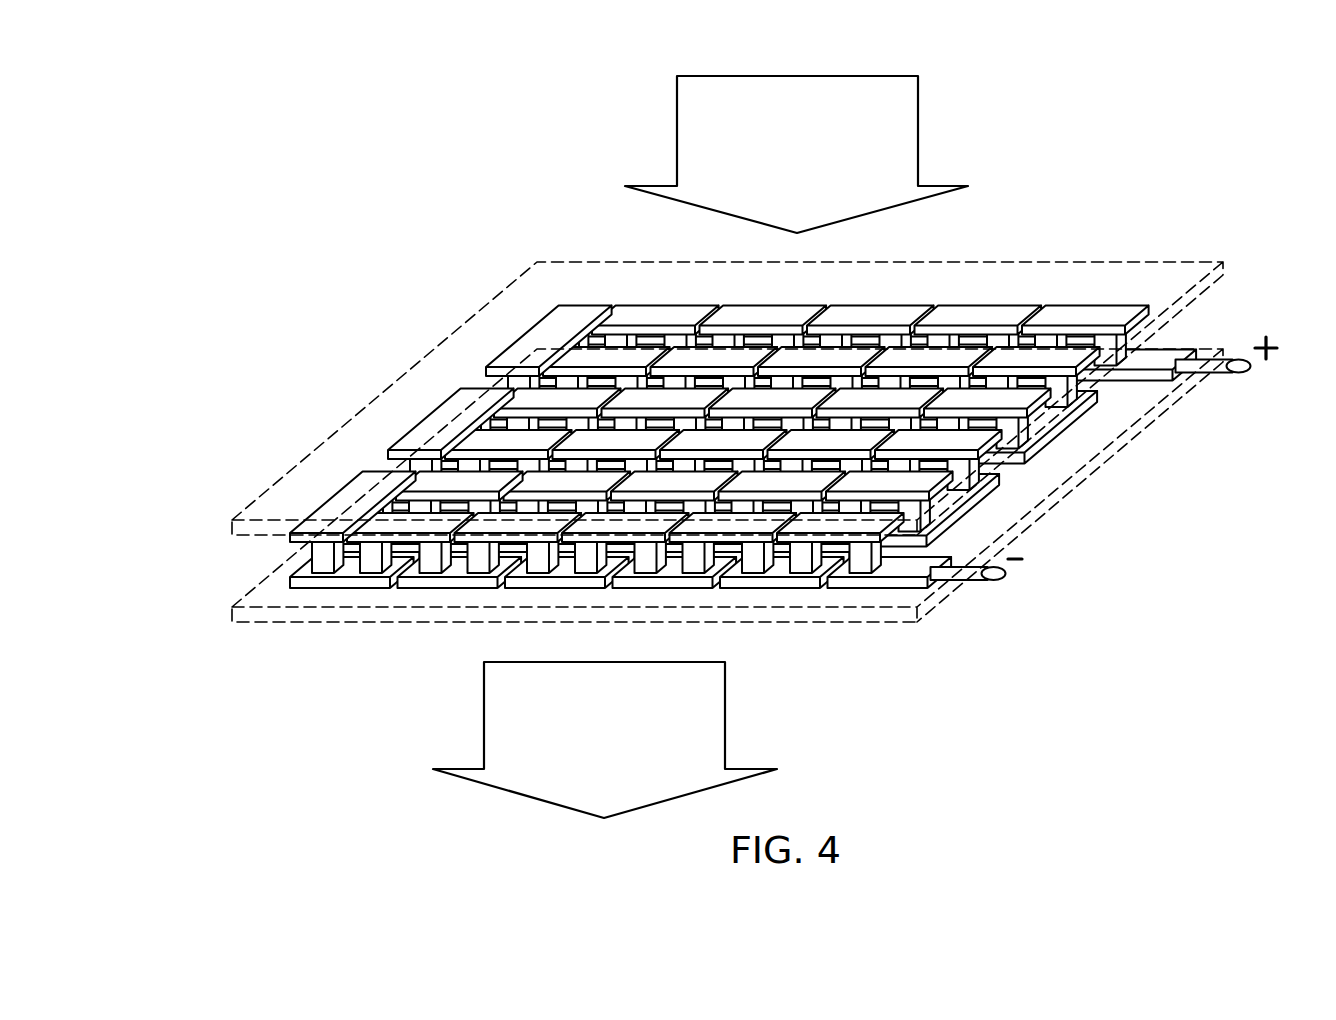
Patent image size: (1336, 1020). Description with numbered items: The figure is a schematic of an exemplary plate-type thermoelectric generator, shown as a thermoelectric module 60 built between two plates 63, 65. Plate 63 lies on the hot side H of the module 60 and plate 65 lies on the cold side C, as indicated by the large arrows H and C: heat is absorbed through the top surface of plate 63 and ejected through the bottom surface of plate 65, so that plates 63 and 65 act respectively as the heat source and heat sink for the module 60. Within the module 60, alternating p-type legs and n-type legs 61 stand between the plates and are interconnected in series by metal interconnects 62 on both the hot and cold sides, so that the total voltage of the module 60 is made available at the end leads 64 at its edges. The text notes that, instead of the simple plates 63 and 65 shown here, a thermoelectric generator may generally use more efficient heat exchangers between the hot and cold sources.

The thermoelectric module 60 is at (706, 463).
The p-type legs and n-type legs 61 is at (801, 566).
The metal interconnects 62 is at (427, 485).
The plate 63 is at (232, 522).
The end leads 64 is at (999, 579).
The plate 65 is at (232, 610).
The hot side H is at (918, 128).
The cold side C is at (725, 700).